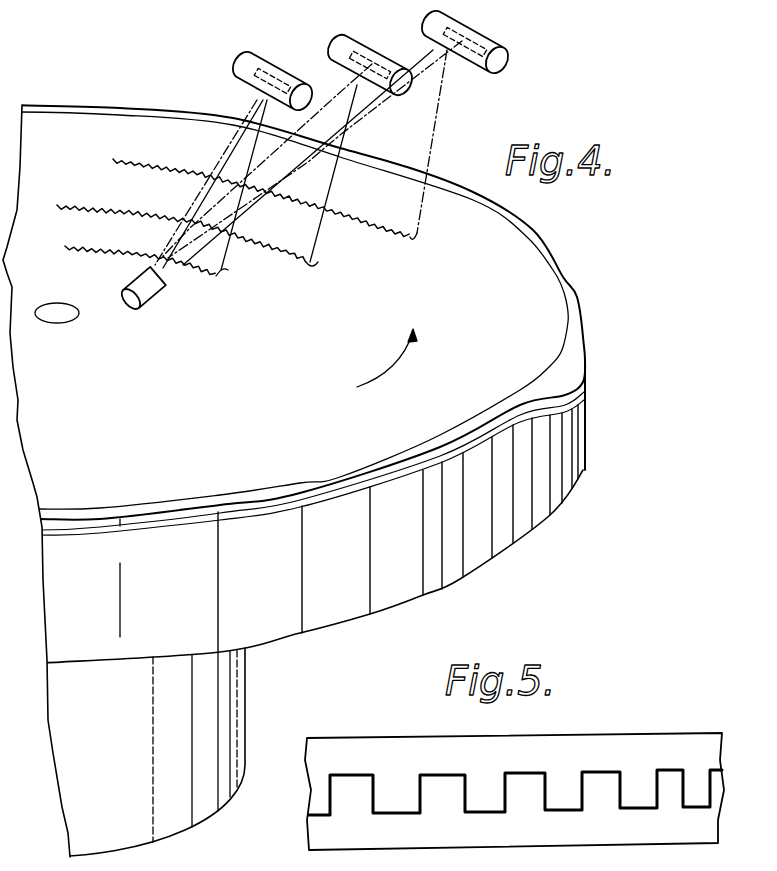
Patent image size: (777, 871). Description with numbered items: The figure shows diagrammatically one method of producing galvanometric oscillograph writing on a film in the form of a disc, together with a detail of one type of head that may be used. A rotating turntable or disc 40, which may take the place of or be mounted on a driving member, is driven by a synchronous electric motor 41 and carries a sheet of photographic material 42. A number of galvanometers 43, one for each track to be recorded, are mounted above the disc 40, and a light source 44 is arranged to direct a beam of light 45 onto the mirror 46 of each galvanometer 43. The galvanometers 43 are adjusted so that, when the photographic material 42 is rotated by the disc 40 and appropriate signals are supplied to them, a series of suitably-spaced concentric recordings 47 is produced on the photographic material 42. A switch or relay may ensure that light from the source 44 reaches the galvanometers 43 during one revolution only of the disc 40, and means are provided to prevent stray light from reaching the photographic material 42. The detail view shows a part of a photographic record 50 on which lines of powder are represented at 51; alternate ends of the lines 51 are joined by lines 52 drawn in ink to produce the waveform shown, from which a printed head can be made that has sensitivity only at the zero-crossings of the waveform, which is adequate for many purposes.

In FIG. 4, the rotating turntable or disc 40 is at (535, 234).
In FIG. 4, the synchronous electric motor 41 is at (232, 704).
In FIG. 4, the sheet of photographic material 42 is at (387, 182).
In FIG. 4, the galvanometers 43 is at (332, 46).
In FIG. 4, the light source 44 is at (150, 297).
In FIG. 4, the beam of light 45 is at (223, 160).
In FIG. 4, the mirror 46 is at (244, 78).
In FIG. 4, the concentric recordings 47 is at (207, 266).
In FIG. 5, the part of a photographic record 50 is at (683, 735).
In FIG. 5, the lines of powder 51 is at (376, 796).
In FIG. 5, the lines drawn in ink 52 is at (372, 774).